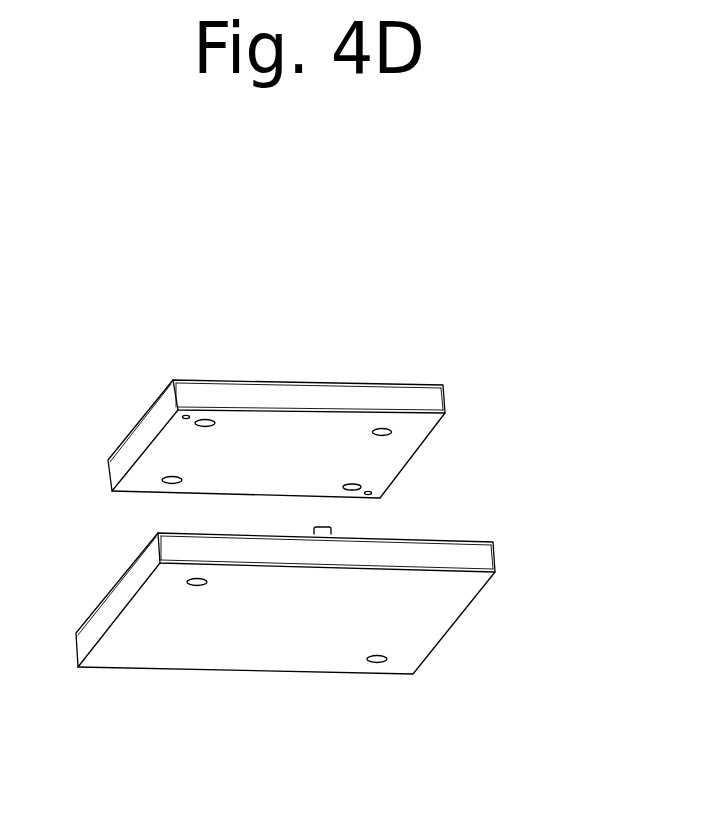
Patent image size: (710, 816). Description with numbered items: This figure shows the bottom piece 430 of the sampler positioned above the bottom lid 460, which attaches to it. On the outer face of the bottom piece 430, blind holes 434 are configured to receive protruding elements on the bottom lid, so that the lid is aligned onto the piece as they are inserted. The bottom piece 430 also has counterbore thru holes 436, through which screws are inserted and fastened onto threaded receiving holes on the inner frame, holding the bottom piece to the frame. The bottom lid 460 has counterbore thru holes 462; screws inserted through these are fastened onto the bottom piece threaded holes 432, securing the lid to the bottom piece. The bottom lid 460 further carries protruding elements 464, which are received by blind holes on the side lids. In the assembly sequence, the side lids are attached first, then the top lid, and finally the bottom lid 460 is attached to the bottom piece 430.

The bottom piece 430 is at (145, 413).
The bottom piece threaded holes 432 is at (183, 412).
The blind holes 434 is at (208, 419).
The counterbore thru holes 436 is at (182, 475).
The bottom lid 460 is at (467, 590).
The counterbore thru holes 462 is at (203, 588).
The protruding elements 464 is at (331, 528).